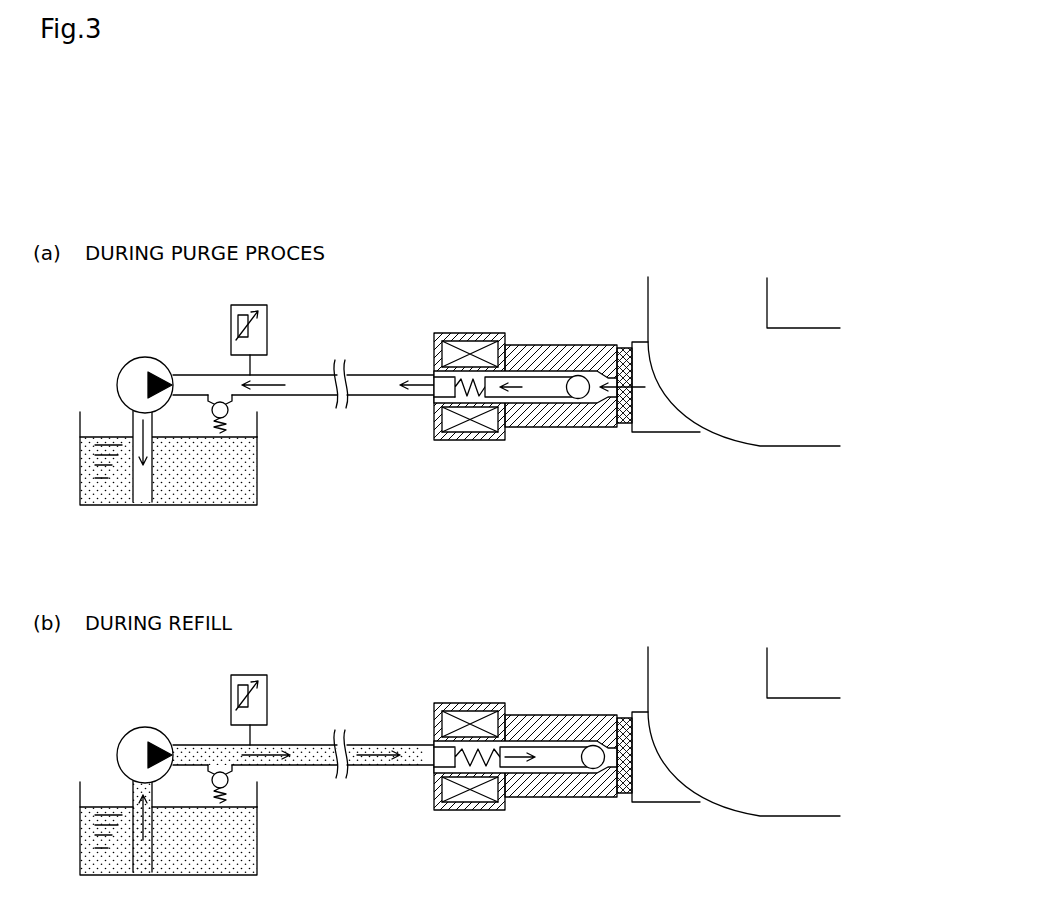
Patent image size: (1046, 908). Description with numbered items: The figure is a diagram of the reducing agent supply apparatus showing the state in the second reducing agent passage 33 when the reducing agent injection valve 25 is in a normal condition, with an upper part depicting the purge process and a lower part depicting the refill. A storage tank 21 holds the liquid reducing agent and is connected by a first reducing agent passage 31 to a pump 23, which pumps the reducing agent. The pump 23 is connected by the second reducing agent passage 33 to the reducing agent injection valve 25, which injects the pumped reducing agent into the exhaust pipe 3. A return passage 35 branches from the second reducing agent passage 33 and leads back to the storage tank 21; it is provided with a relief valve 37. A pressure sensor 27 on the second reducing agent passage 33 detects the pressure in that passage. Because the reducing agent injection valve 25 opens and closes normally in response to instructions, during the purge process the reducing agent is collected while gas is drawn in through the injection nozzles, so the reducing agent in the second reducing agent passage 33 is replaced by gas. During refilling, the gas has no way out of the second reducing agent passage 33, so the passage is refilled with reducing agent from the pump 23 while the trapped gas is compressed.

The exhaust pipe 3 is at (790, 328).
The storage tank 21 is at (262, 479).
The pump 23 is at (144, 358).
The reducing agent injection valve 25 is at (565, 428).
The pressure sensor 27 is at (231, 322).
The first reducing agent passage 31 is at (133, 422).
The second reducing agent passage 33 is at (370, 396).
The return passage 35 is at (257, 417).
The relief valve 37 is at (211, 413).